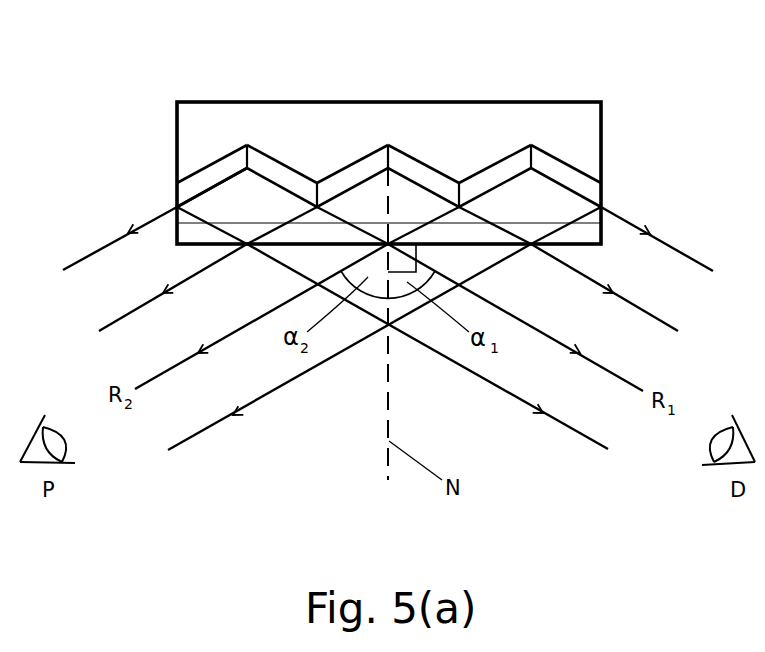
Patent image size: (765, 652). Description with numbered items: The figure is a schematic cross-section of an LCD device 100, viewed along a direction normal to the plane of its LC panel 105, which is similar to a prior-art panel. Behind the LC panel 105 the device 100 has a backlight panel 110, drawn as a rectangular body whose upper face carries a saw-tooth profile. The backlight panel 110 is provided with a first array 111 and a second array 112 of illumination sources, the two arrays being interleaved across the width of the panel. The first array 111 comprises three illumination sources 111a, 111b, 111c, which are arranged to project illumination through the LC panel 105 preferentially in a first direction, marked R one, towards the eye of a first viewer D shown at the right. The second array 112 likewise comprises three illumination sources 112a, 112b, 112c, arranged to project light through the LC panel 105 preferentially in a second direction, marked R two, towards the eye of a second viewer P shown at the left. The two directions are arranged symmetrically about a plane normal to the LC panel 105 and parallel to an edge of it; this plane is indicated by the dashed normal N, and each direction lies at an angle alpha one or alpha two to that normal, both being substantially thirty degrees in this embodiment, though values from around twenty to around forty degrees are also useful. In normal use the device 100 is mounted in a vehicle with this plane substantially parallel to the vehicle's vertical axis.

The LCD device 100 is at (606, 101).
The backlight panel 110 is at (592, 135).
The first array 111 is at (185, 167).
The second array 112 is at (431, 109).
The LC panel 105 is at (588, 233).
The illumination source 111a is at (225, 172).
The illumination source 112a is at (288, 178).
The illumination source 111b is at (360, 173).
The illumination source 112b is at (420, 173).
The illumination source 111c is at (493, 177).
The illumination source 112c is at (552, 170).